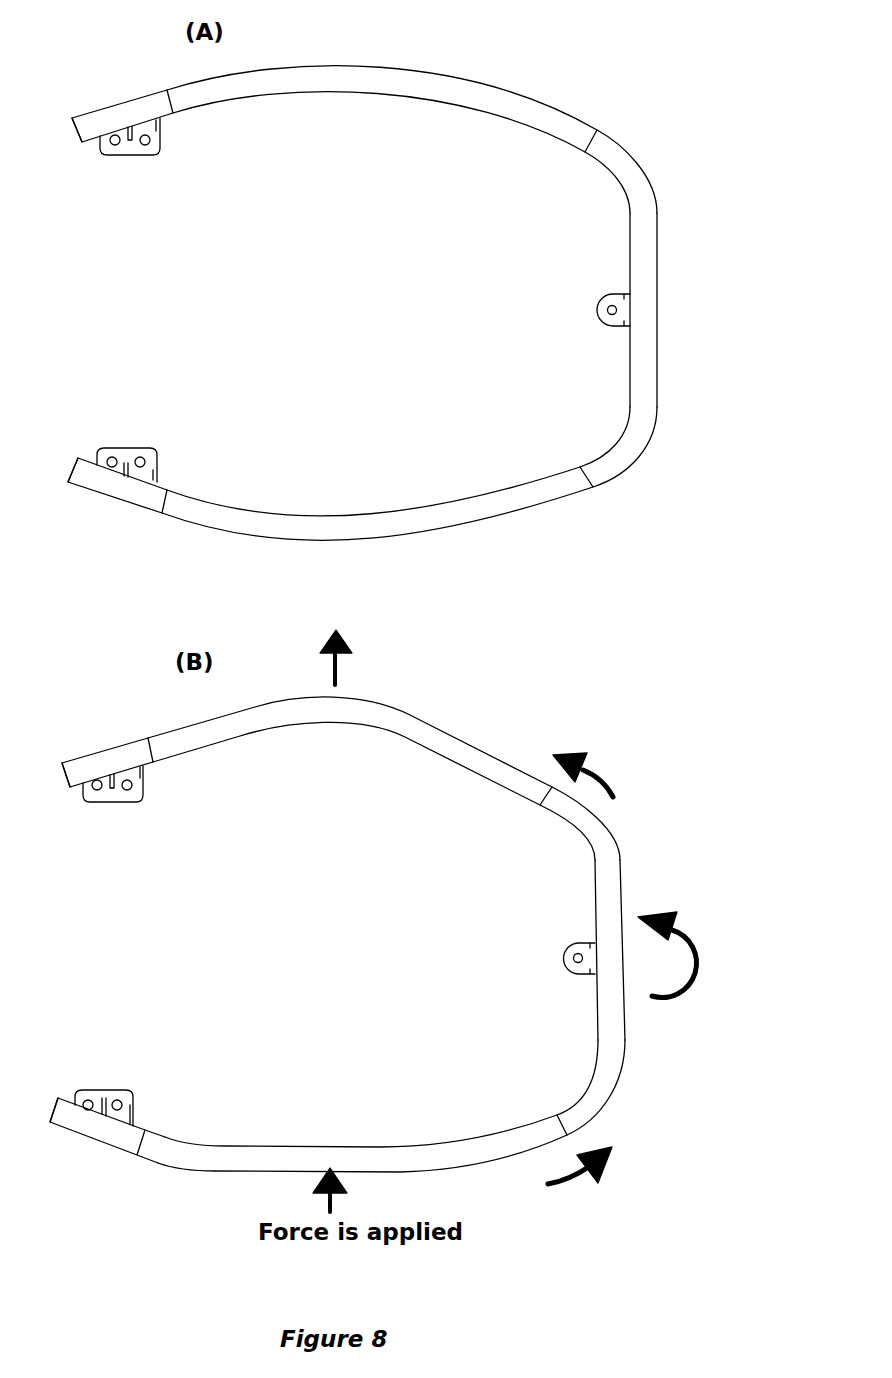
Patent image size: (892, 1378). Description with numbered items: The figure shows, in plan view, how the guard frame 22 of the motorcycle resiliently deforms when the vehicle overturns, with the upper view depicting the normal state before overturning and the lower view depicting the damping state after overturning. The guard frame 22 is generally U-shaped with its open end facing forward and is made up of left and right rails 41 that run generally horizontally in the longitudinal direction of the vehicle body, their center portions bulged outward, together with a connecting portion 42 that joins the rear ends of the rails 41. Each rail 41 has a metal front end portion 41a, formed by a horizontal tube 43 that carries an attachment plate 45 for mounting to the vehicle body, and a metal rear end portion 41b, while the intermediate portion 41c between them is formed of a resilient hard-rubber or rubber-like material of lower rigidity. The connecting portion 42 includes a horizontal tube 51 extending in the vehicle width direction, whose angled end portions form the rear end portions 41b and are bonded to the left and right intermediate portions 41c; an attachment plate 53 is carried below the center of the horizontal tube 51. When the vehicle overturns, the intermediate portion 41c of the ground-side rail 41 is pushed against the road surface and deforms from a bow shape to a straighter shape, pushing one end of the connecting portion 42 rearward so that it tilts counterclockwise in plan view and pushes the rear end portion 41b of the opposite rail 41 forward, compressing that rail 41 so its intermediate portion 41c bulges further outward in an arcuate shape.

In FIG. 8A, the guard frame 22 is at (398, 327).
In FIG. 8B, the guard frame 22 is at (383, 972).
In FIG. 8A, the rail 41 is at (398, 327).
In FIG. 8B, the rail 41 is at (383, 972).
In FIG. 8A, the front end portion 41a is at (118, 102).
In FIG. 8B, the front end portion 41a is at (100, 752).
In FIG. 8A, the rear end portion 41b is at (617, 138).
In FIG. 8B, the rear end portion 41b is at (555, 800).
In FIG. 8A, the intermediate portion 41c is at (360, 87).
In FIG. 8B, the intermediate portion 41c is at (377, 718).
In FIG. 8A, the connecting portion 42 is at (657, 267).
In FIG. 8B, the connecting portion 42 is at (620, 895).
In FIG. 8A, the horizontal tube 43 is at (90, 140).
In FIG. 8B, the horizontal tube 43 is at (68, 773).
In FIG. 8A, the attachment plate 45 is at (133, 157).
In FIG. 8B, the attachment plate 45 is at (115, 805).
In FIG. 8A, the horizontal tube 51 is at (643, 225).
In FIG. 8B, the horizontal tube 51 is at (607, 877).
In FIG. 8A, the attachment plate 53 is at (597, 310).
In FIG. 8B, the attachment plate 53 is at (563, 958).